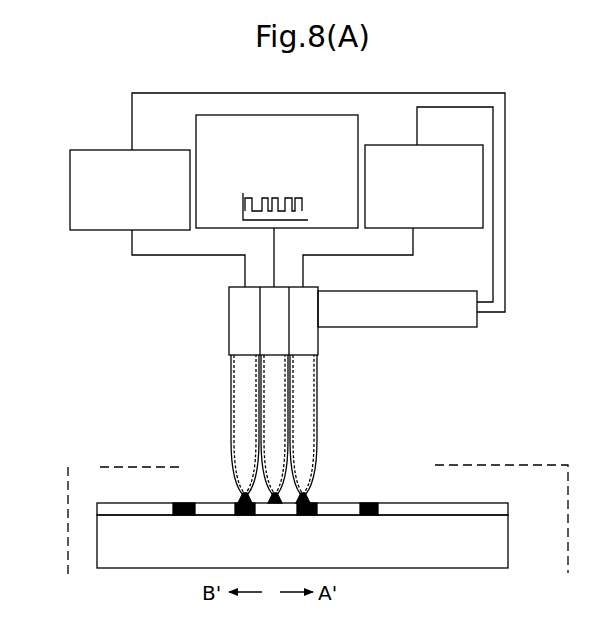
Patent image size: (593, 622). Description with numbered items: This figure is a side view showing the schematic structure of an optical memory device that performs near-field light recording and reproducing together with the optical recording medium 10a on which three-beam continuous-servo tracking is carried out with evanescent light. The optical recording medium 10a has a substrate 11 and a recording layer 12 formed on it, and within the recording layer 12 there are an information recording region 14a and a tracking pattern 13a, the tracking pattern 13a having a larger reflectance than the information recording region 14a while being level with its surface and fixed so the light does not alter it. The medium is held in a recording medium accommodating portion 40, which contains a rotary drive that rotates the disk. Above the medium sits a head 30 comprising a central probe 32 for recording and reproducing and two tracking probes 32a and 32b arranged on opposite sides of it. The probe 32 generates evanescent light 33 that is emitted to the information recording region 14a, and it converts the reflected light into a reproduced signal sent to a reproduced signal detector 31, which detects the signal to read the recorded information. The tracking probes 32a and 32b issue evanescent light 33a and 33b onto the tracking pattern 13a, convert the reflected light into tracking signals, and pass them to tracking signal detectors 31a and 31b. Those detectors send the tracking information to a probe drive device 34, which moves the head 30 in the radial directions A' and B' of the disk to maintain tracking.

The reproduced signal detector 31 is at (195, 123).
The tracking signal detector 31a is at (87, 149).
The tracking signal detector 31b is at (452, 144).
The probe drive device 34 is at (443, 327).
The head 30 is at (361, 381).
The probe 32 is at (277, 413).
The tracking probe 32a is at (232, 422).
The tracking probe 32b is at (320, 422).
The evanescent light 33 is at (270, 497).
The evanescent light for tracking 33a is at (242, 497).
The evanescent light for tracking 33b is at (308, 498).
The substrate 11 is at (500, 537).
The recording layer 12 is at (500, 509).
The tracking pattern 13a is at (370, 502).
The information recording region 14a is at (273, 510).
The recording medium accommodating portion 40 is at (113, 465).
The optical recording medium 10a is at (115, 498).